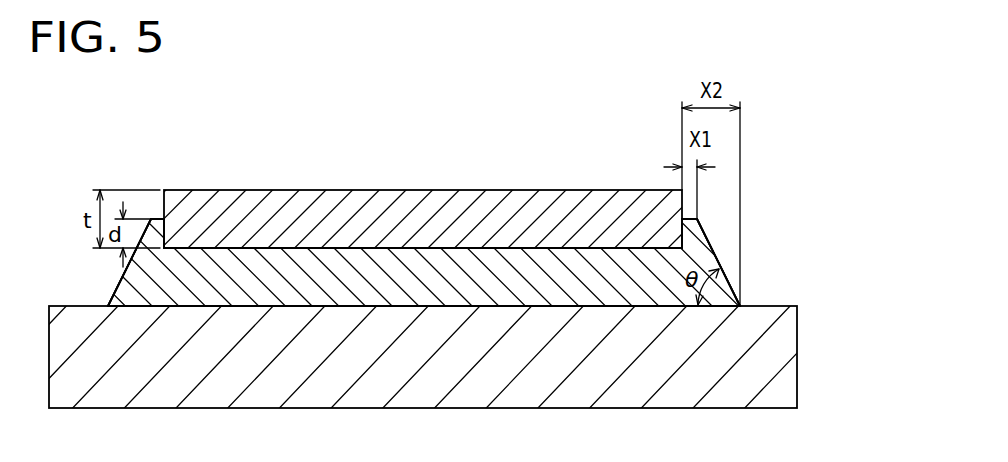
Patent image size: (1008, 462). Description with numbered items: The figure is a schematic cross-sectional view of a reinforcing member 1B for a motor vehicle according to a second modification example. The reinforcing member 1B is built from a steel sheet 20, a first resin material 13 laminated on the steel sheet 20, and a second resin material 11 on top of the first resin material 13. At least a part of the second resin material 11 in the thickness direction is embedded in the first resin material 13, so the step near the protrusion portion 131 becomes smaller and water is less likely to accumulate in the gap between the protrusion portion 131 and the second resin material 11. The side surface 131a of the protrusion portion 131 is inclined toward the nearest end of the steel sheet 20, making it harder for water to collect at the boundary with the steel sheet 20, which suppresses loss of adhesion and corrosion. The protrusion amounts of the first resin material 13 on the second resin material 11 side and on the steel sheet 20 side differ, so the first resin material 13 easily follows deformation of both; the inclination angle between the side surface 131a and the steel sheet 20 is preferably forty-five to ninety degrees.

The reinforcing member 1B is at (860, 128).
The second resin material 11 is at (416, 190).
The first resin material 13 is at (516, 258).
The protrusion portion 131 is at (125, 268).
The side surface 131a is at (113, 287).
The steel sheet 20 is at (798, 355).